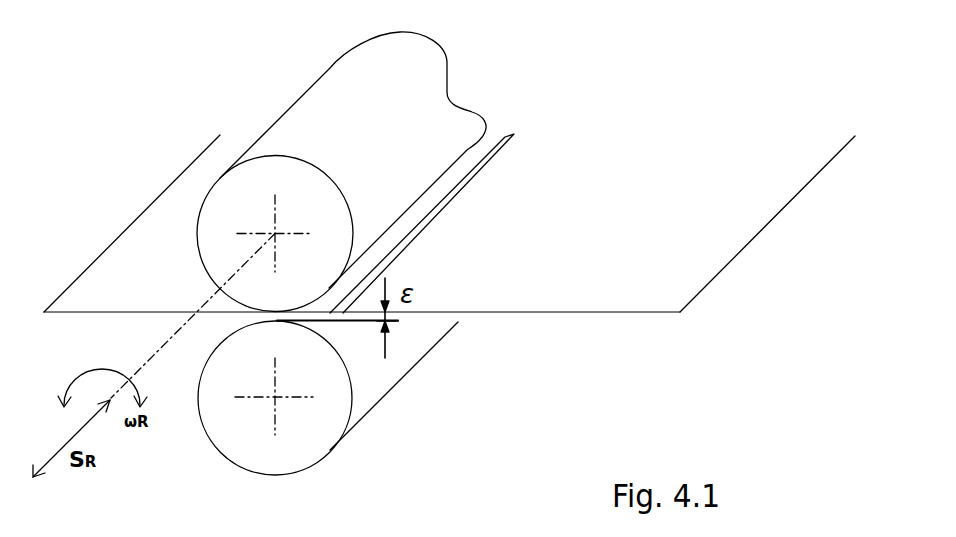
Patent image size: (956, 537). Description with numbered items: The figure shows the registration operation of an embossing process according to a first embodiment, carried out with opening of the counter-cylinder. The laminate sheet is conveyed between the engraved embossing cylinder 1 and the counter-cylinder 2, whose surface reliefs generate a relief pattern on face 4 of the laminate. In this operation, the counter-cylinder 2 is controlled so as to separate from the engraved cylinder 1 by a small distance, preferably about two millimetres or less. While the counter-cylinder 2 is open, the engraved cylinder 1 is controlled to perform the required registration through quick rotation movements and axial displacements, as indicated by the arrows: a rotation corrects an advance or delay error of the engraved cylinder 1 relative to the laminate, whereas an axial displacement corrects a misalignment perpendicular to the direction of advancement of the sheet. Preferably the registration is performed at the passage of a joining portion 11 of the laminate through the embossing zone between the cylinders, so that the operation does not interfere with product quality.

The engraved embossing cylinder 1 is at (323, 100).
The counter-cylinder 2 is at (372, 378).
The face of laminate 4 is at (603, 274).
The joining portion 11 is at (477, 177).